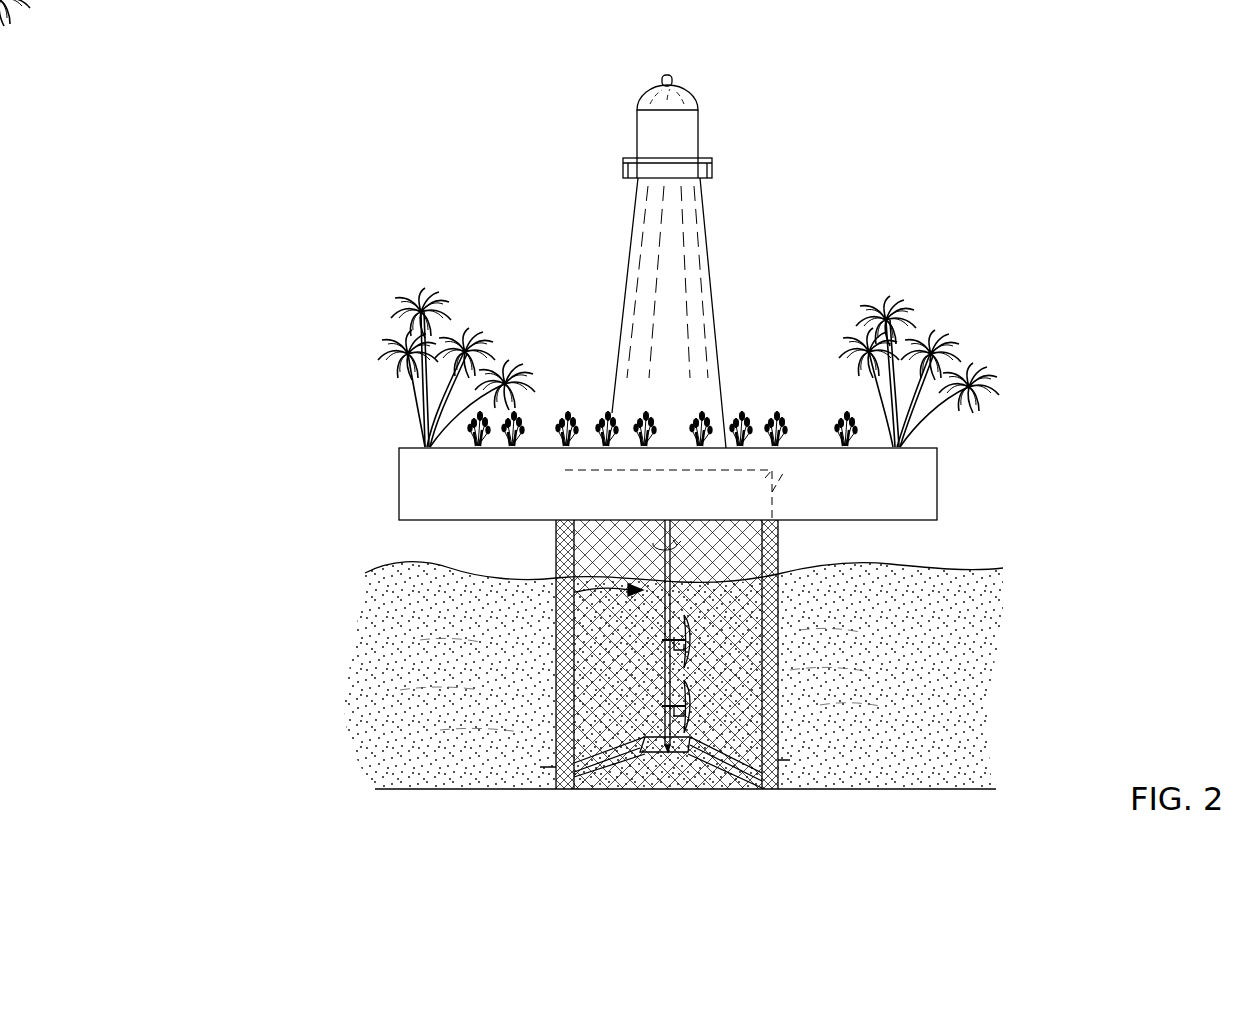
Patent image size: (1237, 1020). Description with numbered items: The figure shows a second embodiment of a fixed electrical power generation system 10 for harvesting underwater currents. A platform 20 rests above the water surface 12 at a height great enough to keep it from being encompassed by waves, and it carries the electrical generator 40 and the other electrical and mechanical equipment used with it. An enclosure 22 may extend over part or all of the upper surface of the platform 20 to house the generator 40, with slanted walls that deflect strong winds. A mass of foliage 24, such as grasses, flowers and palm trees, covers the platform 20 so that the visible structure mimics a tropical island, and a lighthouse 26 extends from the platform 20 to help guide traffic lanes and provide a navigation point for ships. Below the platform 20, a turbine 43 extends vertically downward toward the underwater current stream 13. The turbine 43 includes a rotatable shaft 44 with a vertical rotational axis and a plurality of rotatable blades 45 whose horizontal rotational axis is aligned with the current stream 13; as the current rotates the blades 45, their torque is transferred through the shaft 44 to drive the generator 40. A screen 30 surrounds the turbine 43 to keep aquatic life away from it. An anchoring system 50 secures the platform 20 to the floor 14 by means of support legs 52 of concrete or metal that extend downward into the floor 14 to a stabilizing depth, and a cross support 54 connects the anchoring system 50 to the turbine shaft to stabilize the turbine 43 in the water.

The fixed electrical power generation system 10 is at (273, 148).
The water surface 12 is at (1003, 568).
The underwater current stream 13 is at (412, 638).
The floor 14 is at (963, 789).
The platform 20 is at (1062, 478).
The enclosure 22 is at (937, 494).
The foliage 24 is at (468, 350).
The lighthouse 26 is at (705, 272).
The screen 30 is at (580, 772).
The electrical generator 40 is at (701, 486).
The turbine 43 is at (600, 578).
The rotatable shaft 44 is at (662, 534).
The rotatable blades 45 is at (690, 665).
The anchoring system 50 is at (785, 548).
The support legs 52 is at (540, 767).
The cross support 54 is at (620, 770).